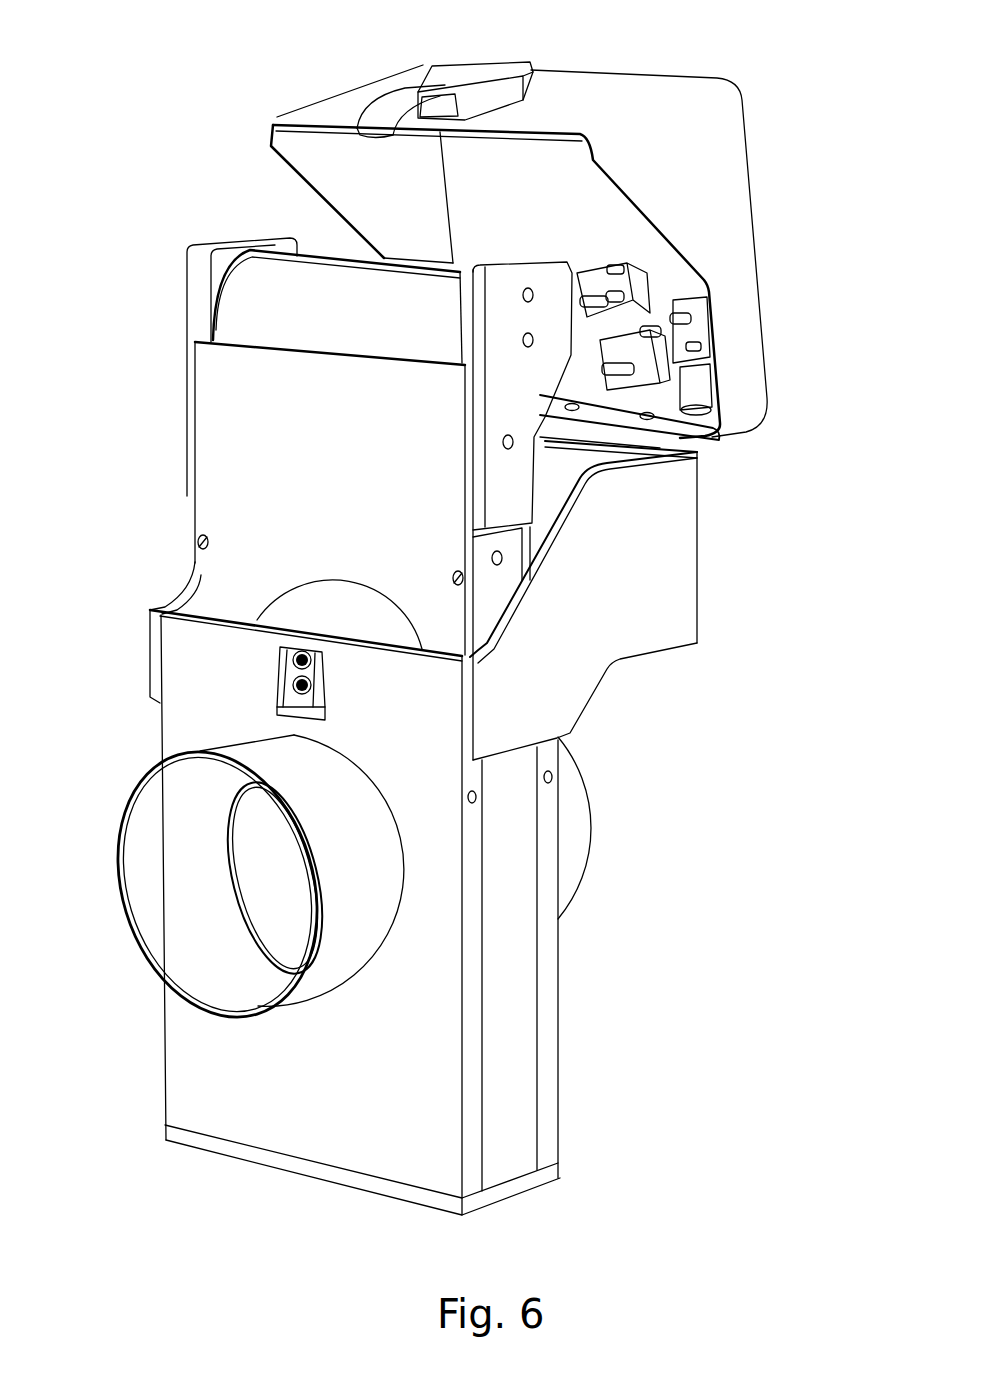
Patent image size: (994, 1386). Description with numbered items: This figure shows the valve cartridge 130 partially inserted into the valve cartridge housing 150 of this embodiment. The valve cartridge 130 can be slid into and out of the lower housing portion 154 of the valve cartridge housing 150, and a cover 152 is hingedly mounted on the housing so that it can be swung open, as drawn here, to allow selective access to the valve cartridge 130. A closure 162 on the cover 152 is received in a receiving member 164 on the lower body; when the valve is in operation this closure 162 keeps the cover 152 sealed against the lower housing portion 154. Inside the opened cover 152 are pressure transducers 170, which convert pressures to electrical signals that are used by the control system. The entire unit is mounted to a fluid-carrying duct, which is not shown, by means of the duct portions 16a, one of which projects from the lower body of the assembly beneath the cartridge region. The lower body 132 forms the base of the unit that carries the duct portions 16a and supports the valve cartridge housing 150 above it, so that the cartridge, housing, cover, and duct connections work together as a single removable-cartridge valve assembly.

The valve cartridge housing 150 is at (762, 513).
The cover 152 is at (717, 177).
The lower housing portion 154 is at (658, 614).
The valve cartridge 130 is at (190, 297).
The damper housing 132 is at (190, 1083).
The closure 162 is at (377, 113).
The receiving member 164 is at (280, 687).
The pressure transducers 170 is at (693, 356).
The duct portions 16a is at (140, 820).